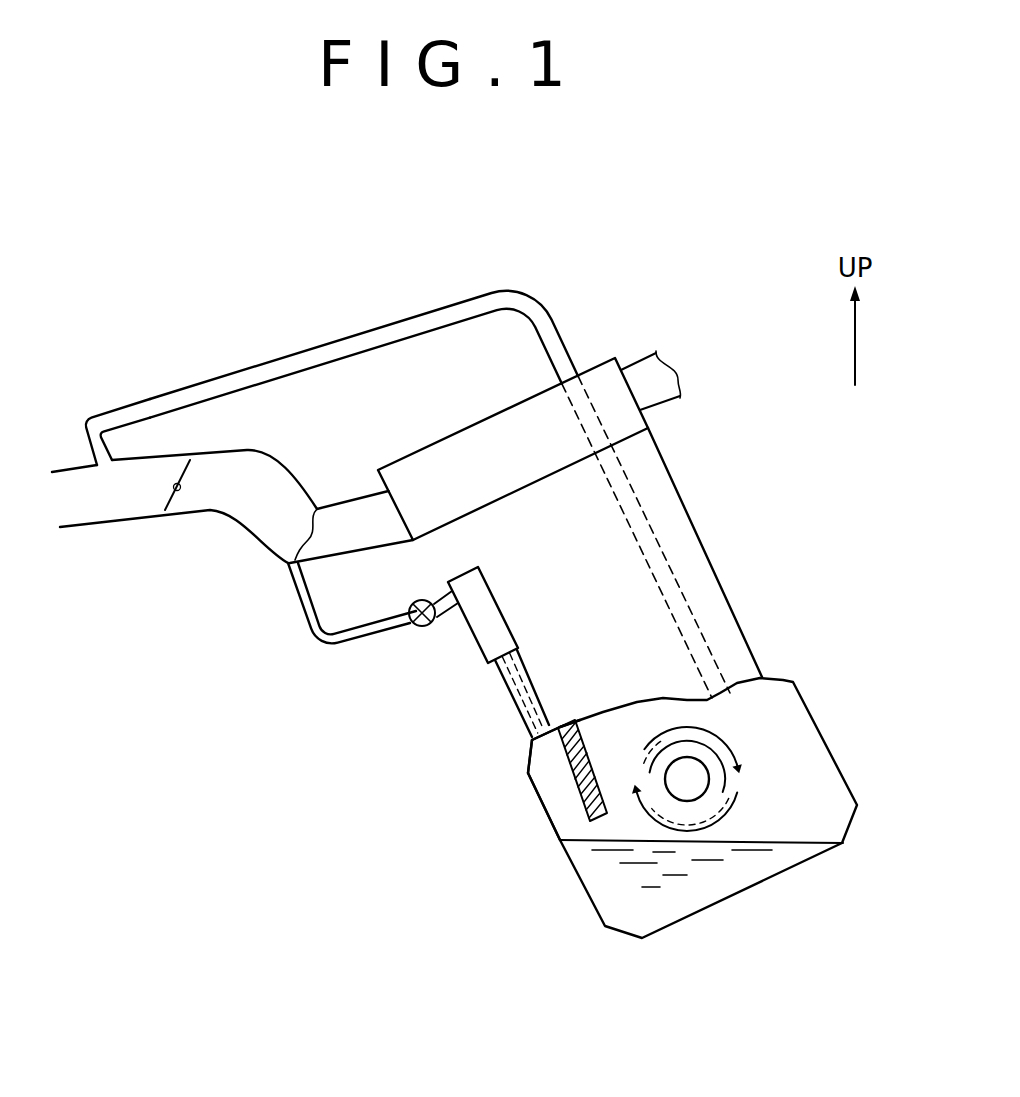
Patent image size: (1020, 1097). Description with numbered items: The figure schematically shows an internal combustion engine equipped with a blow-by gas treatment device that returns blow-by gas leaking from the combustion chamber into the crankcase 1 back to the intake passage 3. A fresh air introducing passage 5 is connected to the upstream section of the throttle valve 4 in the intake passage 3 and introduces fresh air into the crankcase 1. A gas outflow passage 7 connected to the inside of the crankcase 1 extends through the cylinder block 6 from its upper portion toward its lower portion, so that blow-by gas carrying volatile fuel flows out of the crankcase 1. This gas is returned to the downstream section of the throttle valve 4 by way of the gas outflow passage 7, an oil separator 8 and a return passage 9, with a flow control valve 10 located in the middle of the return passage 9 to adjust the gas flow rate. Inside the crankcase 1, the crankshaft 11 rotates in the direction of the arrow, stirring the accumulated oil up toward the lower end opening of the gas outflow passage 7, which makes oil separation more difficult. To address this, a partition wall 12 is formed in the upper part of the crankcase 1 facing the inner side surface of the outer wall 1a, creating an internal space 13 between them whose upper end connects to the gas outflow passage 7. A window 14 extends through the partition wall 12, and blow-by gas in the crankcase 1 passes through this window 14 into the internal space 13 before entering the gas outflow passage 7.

The crankcase 1 is at (840, 745).
The outer wall 1a is at (547, 822).
The intake passage 3 is at (99, 524).
The throttle valve 4 is at (172, 500).
The fresh air introducing passage 5 is at (425, 308).
The cylinder block 6 is at (703, 548).
The gas outflow passage 7 is at (507, 688).
The oil separator 8 is at (476, 642).
The return passage 9 is at (298, 609).
The flow control valve 10 is at (412, 602).
The crankshaft 11 is at (702, 757).
The partition wall 12 is at (557, 725).
The internal space 13 is at (540, 754).
The window 14 is at (580, 770).